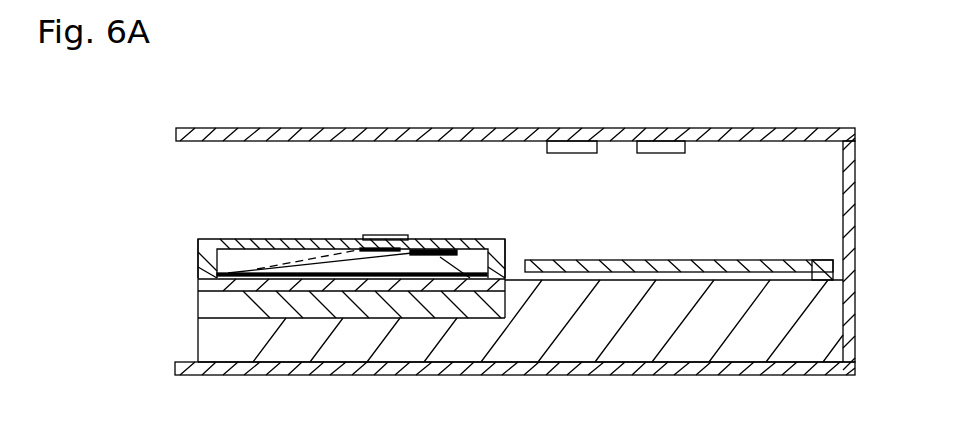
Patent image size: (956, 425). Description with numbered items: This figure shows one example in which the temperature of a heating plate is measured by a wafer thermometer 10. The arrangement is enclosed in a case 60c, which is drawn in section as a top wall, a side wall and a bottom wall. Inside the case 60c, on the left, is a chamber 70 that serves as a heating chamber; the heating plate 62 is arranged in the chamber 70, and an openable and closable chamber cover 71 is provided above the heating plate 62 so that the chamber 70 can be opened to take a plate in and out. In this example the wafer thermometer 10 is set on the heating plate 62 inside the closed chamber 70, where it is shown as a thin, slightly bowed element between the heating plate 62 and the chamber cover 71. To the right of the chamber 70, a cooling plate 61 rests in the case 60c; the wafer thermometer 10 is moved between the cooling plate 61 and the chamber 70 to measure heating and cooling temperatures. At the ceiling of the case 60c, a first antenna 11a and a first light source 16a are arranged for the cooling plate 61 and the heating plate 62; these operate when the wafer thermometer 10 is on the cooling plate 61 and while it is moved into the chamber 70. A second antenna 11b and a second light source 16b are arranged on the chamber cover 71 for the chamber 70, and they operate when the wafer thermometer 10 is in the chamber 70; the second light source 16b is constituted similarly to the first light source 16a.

The case 60c is at (797, 128).
The cooling plate 61 is at (833, 268).
The heating plate 62 is at (243, 292).
The chamber 70 is at (190, 280).
The chamber cover 71 is at (198, 252).
The wafer thermometer 10 is at (286, 278).
The first antenna 11a is at (571, 155).
The second antenna 11b is at (387, 235).
The first light source 16a is at (660, 155).
The second light source 16b is at (437, 250).